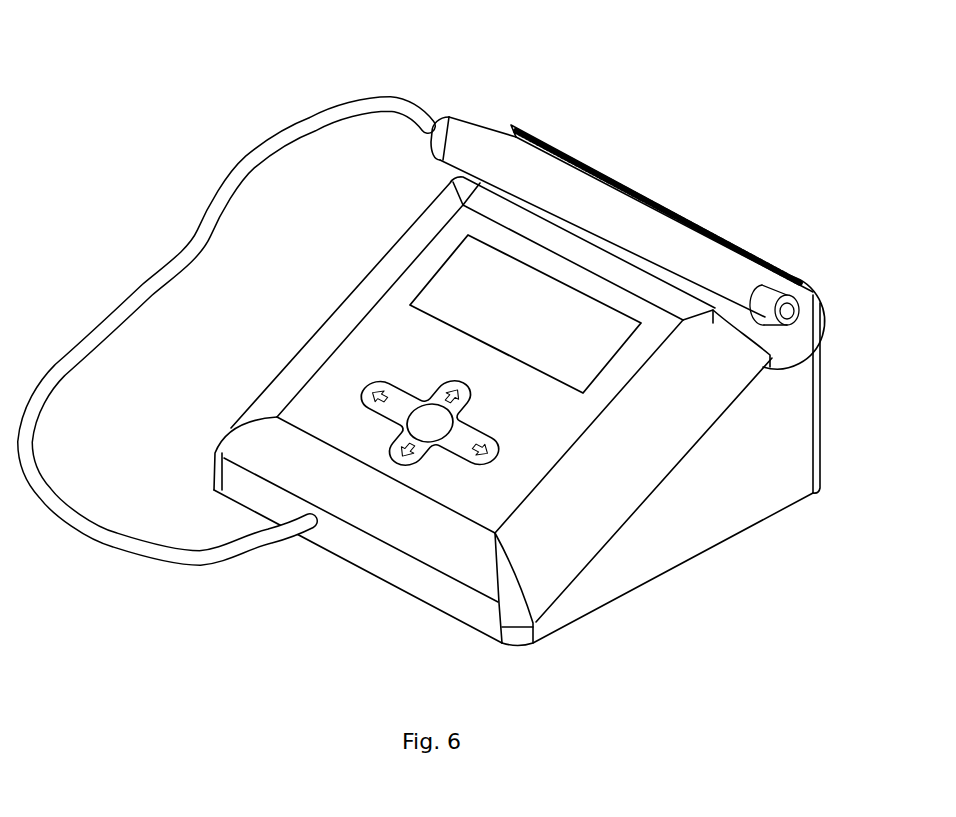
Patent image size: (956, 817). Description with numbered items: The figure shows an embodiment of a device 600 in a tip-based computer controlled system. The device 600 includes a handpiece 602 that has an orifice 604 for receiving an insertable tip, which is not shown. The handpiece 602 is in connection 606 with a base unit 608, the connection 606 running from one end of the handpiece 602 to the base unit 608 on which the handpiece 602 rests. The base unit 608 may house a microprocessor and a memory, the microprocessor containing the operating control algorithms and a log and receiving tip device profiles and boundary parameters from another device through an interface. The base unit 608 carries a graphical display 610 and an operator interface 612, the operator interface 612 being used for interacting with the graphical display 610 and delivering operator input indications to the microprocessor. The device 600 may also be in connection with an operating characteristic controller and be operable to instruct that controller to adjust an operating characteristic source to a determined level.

The device 600 is at (197, 86).
The handpiece 602 is at (473, 137).
The orifice 604 is at (800, 308).
The connection 606 is at (164, 268).
The base unit 608 is at (713, 488).
The graphical display 610 is at (442, 270).
The operator interface 612 is at (457, 443).